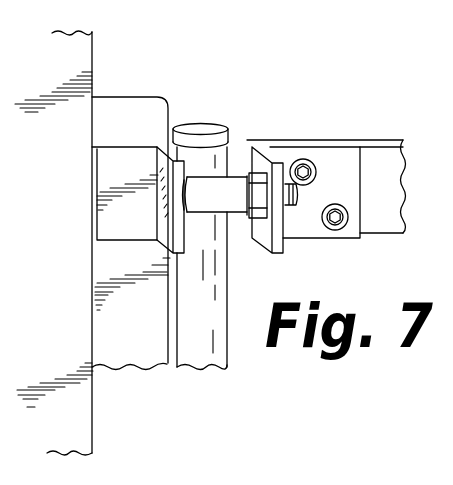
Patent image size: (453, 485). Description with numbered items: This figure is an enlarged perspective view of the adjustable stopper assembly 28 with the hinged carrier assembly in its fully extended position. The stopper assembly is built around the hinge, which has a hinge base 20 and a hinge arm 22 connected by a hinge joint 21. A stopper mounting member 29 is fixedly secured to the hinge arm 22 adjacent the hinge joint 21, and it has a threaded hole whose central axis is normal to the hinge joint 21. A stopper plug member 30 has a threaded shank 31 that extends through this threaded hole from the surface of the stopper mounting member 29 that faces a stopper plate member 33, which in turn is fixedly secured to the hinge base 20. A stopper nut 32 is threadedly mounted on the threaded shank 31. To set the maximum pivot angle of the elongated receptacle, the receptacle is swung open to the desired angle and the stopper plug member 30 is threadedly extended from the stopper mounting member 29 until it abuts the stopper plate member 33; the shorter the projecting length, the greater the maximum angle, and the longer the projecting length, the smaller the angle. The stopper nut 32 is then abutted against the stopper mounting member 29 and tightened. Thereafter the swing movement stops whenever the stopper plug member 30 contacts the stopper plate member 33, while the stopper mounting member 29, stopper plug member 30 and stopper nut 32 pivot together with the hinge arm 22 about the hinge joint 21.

The hinge base 20 is at (138, 320).
The hinge joint 21 is at (210, 128).
The hinge arm 22 is at (377, 163).
The adjustable stopper assembly 28 is at (292, 134).
The stopper mounting member 29 is at (333, 165).
The stopper plug member 30 is at (237, 190).
The threaded shank 31 is at (294, 199).
The stopper nut 32 is at (255, 213).
The stopper plate member 33 is at (130, 160).